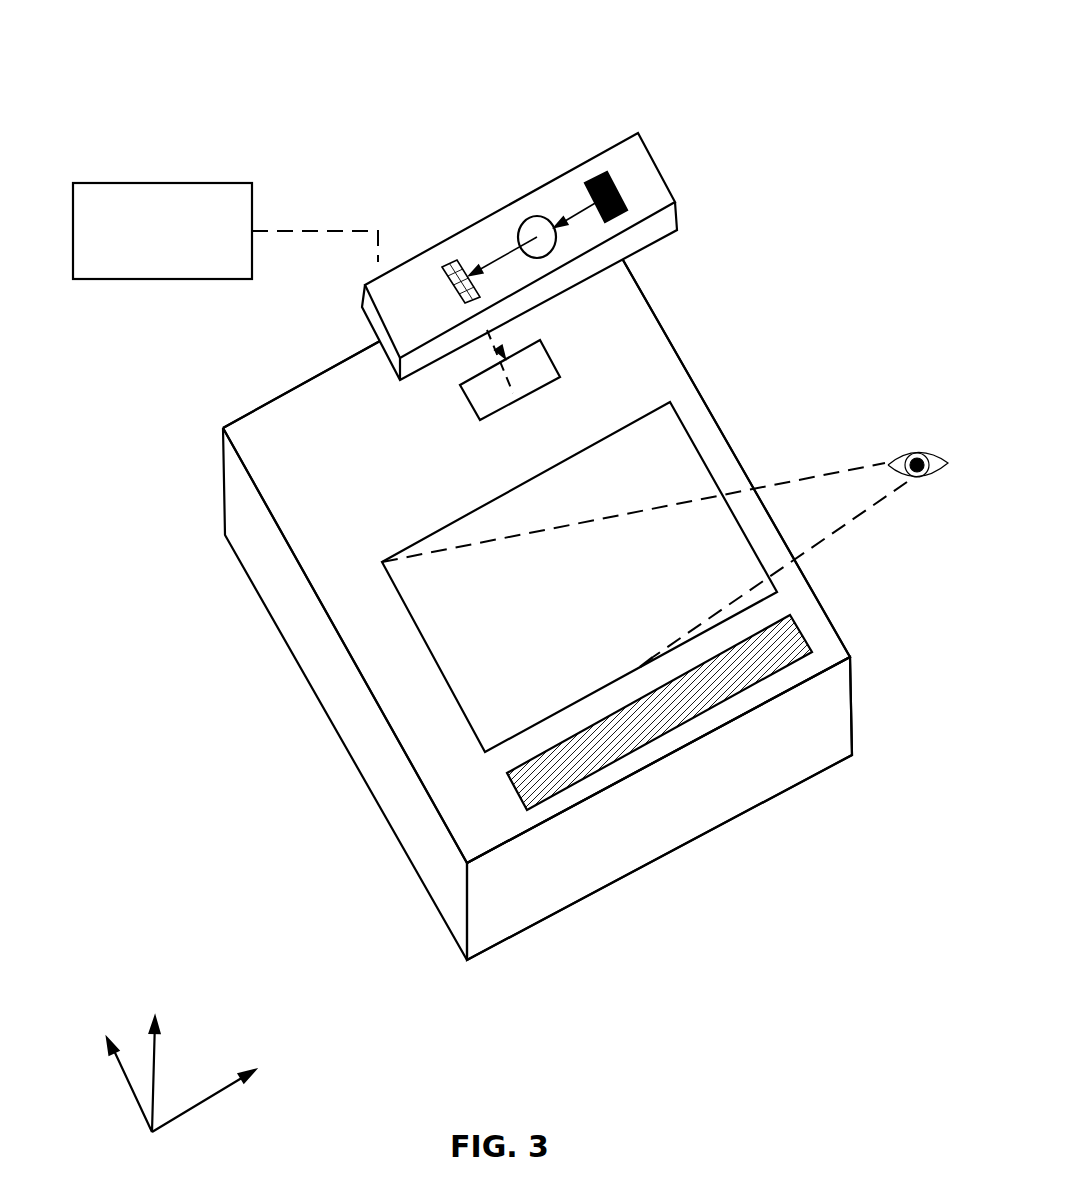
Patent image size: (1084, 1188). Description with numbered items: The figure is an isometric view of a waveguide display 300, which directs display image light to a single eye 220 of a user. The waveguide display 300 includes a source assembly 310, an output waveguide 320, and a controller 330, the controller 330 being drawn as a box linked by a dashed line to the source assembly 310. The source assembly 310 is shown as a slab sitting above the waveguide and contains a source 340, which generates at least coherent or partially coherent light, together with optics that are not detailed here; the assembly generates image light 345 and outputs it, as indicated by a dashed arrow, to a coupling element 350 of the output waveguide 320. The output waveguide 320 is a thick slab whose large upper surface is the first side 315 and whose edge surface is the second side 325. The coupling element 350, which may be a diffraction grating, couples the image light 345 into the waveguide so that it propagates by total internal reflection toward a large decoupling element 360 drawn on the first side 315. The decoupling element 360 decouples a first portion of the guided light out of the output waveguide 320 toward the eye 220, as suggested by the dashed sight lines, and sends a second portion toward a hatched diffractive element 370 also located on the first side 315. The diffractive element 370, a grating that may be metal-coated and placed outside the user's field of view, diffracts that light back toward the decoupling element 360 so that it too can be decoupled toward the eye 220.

The waveguide display 300 is at (501, 571).
The source assembly 310 is at (612, 199).
The first side 315 is at (343, 522).
The output waveguide 320 is at (358, 668).
The second side 325 is at (555, 920).
The controller 330 is at (225, 231).
The source 340 is at (625, 120).
The image light 345 is at (510, 365).
The coupling element 350 is at (560, 377).
The decoupling element 360 is at (435, 657).
The diffractive element 370 is at (670, 730).
The eye 220 is at (671, 559).